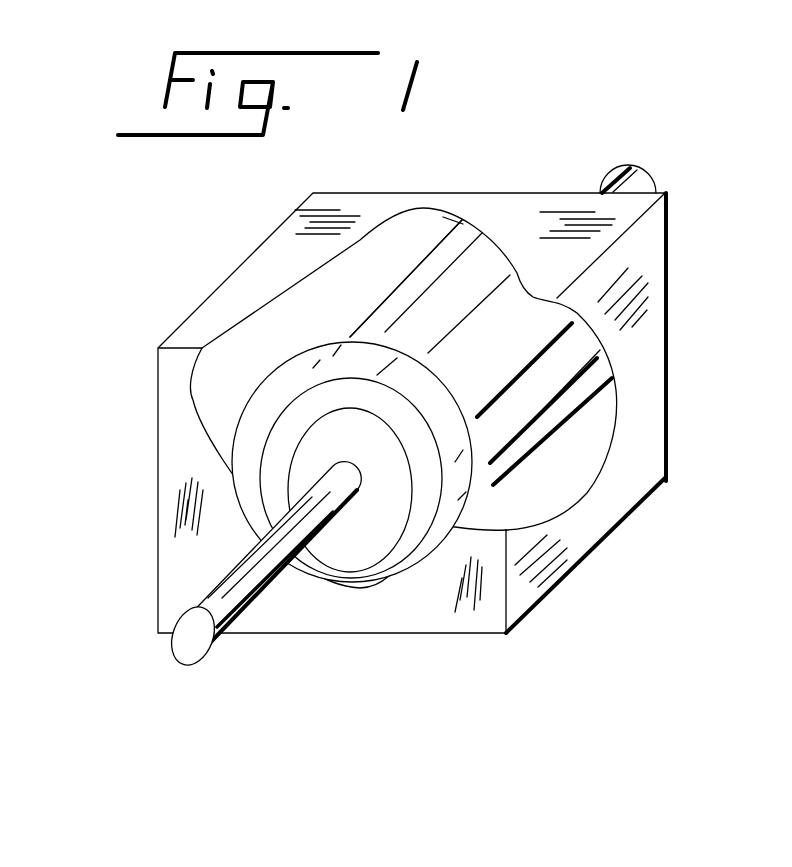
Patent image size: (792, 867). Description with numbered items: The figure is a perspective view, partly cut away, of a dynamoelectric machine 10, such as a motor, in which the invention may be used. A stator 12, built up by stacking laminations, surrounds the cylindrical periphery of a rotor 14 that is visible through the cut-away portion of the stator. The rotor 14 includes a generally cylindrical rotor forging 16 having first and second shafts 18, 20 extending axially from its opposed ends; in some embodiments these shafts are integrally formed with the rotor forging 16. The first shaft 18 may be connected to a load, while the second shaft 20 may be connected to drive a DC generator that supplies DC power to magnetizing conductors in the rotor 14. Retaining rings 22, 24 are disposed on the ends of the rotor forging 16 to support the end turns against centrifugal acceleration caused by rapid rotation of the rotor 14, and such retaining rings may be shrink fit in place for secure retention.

The dynamoelectric machine 10 is at (166, 244).
The stator 12 is at (590, 448).
The rotor 14 is at (545, 450).
The rotor forging 16 is at (502, 456).
The first shaft 18 is at (215, 643).
The second shaft 20 is at (640, 182).
The retaining ring 22 is at (275, 408).
The retaining ring 24 is at (432, 235).